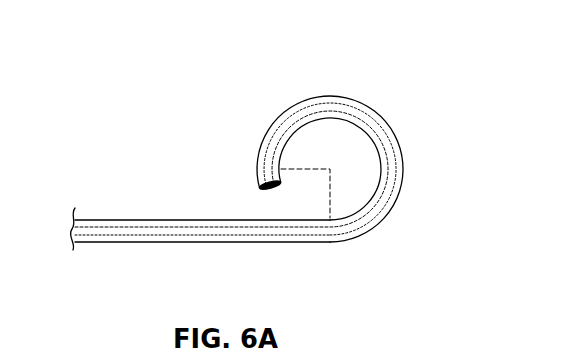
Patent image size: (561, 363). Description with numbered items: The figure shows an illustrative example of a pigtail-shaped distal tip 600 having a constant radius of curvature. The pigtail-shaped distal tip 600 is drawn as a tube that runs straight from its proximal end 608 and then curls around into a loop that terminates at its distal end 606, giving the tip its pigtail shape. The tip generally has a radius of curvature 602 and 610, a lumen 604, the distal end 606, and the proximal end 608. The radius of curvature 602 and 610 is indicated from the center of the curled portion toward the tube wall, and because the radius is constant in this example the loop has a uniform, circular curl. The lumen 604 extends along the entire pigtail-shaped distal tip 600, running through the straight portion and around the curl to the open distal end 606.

The pigtail-shaped distal tip 600 is at (270, 175).
The radius of curvature 602 is at (328, 195).
The lumen 604 is at (138, 230).
The distal end 606 is at (363, 232).
The proximal end 608 is at (167, 220).
The radius of curvature 610 is at (315, 168).